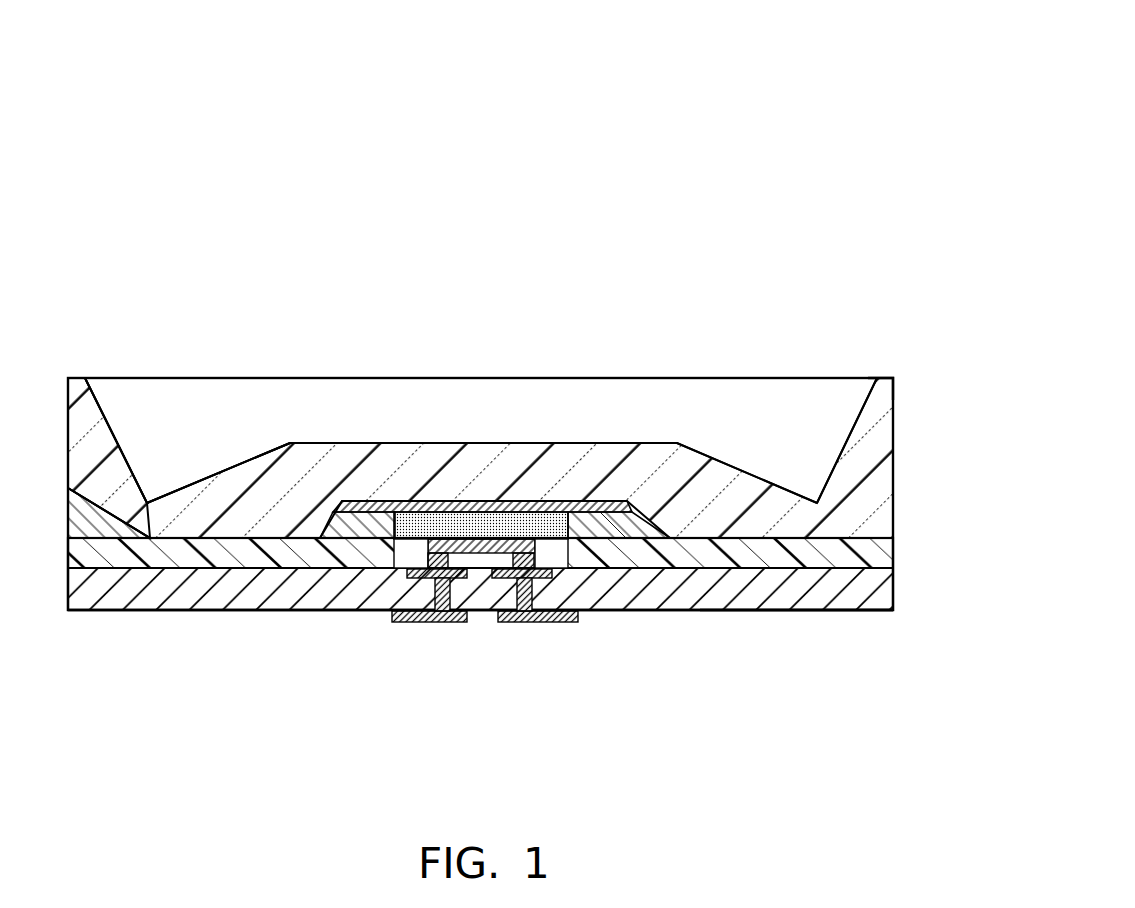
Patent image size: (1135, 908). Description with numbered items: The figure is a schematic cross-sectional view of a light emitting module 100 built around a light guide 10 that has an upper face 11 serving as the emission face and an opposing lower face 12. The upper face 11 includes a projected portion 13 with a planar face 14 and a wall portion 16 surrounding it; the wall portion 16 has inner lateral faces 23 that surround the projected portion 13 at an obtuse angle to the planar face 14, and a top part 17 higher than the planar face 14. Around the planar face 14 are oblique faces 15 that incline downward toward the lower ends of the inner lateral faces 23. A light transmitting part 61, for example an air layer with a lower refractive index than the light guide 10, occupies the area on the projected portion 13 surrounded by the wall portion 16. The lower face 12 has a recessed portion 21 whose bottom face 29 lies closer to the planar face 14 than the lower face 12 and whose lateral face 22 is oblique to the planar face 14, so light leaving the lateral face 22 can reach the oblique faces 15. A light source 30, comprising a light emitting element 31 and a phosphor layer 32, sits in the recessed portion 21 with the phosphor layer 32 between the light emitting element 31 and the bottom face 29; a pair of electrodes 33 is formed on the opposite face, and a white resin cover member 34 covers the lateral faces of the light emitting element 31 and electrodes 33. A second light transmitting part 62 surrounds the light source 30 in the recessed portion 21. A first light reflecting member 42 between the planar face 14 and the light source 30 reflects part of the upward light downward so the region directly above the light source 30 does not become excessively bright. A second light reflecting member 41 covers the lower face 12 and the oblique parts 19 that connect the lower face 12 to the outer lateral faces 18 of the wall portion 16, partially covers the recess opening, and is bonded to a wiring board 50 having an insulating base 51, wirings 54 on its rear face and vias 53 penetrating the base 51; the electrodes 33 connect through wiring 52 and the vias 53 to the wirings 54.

The light emitting module 100 is at (717, 110).
The light guide 10 is at (652, 431).
The upper face 11 is at (605, 443).
The lower face 12 is at (707, 540).
The projected portion 13 is at (501, 441).
The planar face 14 is at (458, 443).
The oblique faces 15 is at (230, 468).
The wall portion 16 is at (867, 462).
The top part 17 is at (883, 380).
The outer lateral faces 18 is at (66, 452).
The oblique parts 19 is at (103, 513).
The recessed portion 21 is at (593, 525).
The lateral face 22 is at (326, 518).
The inner lateral faces 23 is at (124, 452).
The bottom face 29 is at (372, 492).
The light source 30 is at (527, 744).
The light emitting element 31 is at (468, 548).
The phosphor layer 32 is at (490, 517).
The electrodes 33 is at (528, 546).
The cover member 34 is at (421, 555).
The second light reflecting member 41 is at (207, 545).
The first light reflecting member 42 is at (410, 505).
The wiring board 50 is at (897, 550).
The insulating base 51 is at (773, 580).
The wiring 52 is at (437, 592).
The vias 53 is at (528, 552).
The wirings 54 is at (400, 622).
The light transmitting part 61 is at (348, 410).
The second light transmitting part 62 is at (617, 523).